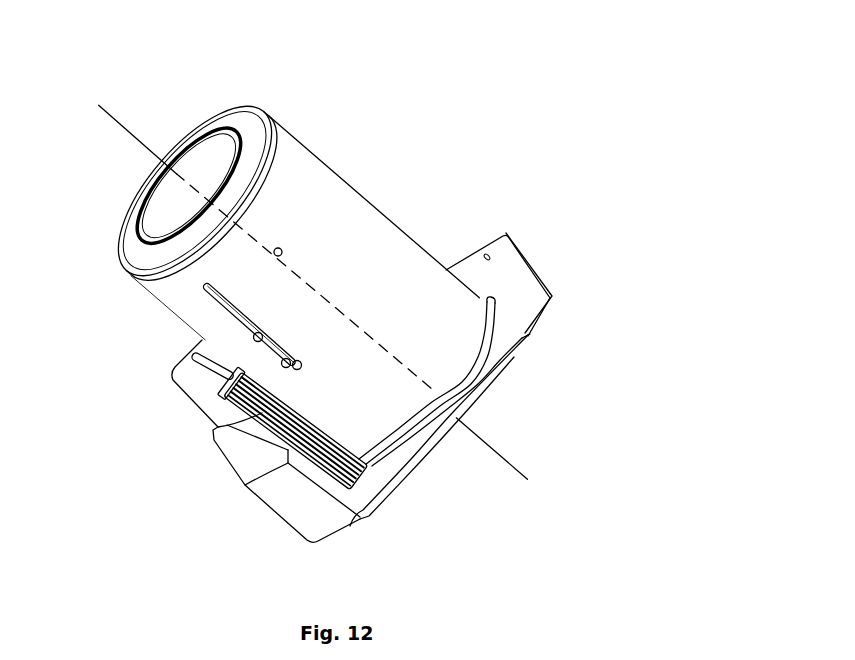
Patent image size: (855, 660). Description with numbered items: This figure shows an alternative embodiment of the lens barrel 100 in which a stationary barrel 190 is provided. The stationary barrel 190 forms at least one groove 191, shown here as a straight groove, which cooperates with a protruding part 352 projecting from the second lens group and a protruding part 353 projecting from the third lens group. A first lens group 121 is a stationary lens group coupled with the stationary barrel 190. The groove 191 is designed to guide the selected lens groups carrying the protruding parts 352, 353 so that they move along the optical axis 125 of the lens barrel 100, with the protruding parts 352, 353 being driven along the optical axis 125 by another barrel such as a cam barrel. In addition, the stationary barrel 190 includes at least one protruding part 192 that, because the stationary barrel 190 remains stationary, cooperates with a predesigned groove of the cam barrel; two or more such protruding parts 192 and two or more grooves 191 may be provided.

The lens barrel 100 is at (807, 40).
The first lens group 121 is at (170, 215).
The optical axis 125 is at (483, 442).
The stationary barrel 190 is at (408, 270).
The groove 191 is at (207, 297).
The protruding part 192 is at (282, 250).
The protruding part 352 is at (262, 336).
The protruding part 353 is at (300, 362).